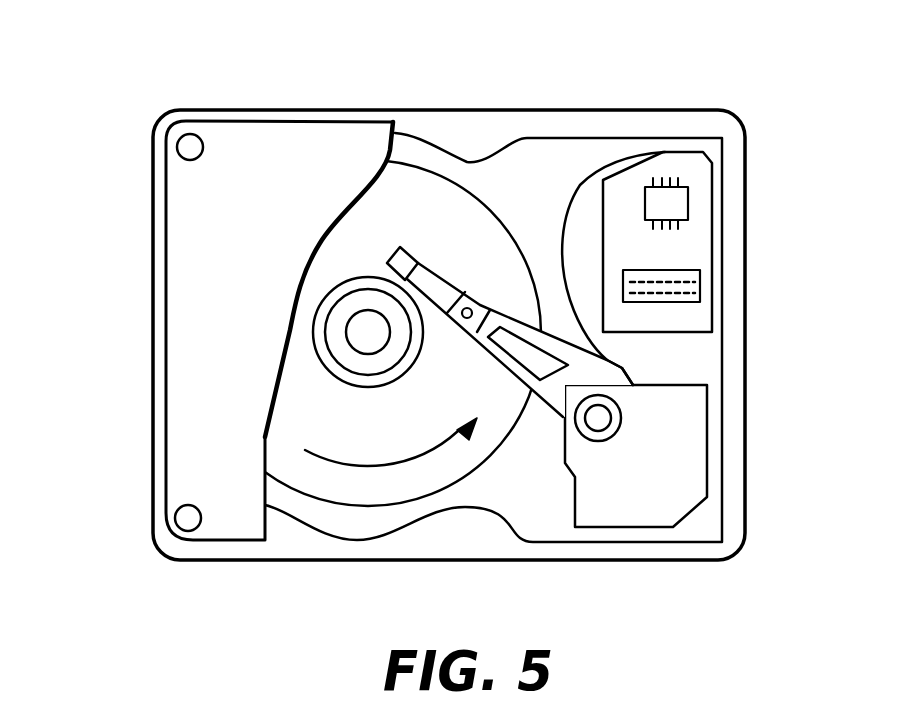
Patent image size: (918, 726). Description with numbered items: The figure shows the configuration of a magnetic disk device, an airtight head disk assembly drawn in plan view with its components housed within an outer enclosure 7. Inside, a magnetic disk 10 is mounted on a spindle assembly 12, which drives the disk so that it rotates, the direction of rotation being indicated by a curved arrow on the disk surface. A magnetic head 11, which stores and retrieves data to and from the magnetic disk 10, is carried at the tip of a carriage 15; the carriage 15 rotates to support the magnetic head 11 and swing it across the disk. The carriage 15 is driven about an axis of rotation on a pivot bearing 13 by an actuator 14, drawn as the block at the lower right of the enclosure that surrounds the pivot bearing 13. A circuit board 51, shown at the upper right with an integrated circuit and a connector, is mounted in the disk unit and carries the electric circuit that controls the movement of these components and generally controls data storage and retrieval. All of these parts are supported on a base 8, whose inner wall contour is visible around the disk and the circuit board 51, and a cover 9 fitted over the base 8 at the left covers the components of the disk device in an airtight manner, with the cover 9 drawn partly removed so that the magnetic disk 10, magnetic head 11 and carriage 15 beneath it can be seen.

The housing 7 is at (746, 168).
The base 8 is at (473, 131).
The cover 9 is at (218, 213).
The magnetic disk 10 is at (398, 487).
The magnetic head 11 is at (408, 249).
The spindle assembly 12 is at (363, 336).
The pivot bearing 13 is at (607, 430).
The actuator 14 is at (687, 417).
The carriage 15 is at (553, 398).
The circuit board 51 is at (695, 247).